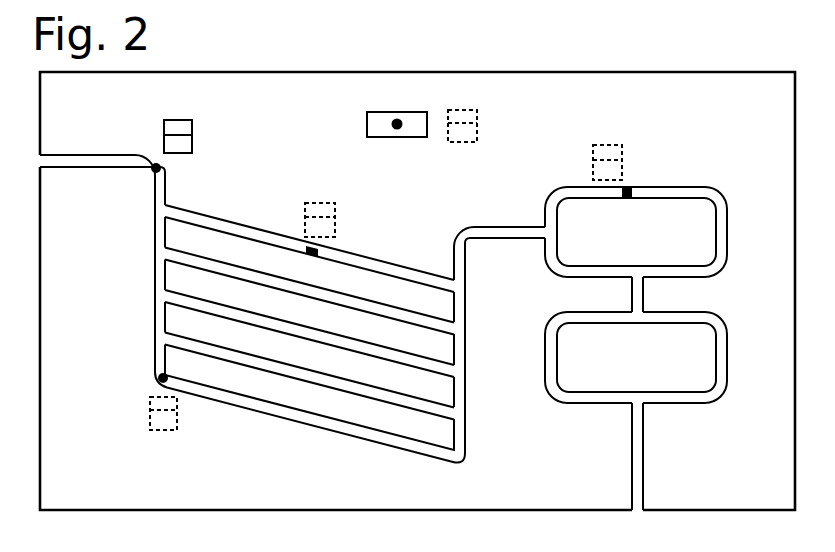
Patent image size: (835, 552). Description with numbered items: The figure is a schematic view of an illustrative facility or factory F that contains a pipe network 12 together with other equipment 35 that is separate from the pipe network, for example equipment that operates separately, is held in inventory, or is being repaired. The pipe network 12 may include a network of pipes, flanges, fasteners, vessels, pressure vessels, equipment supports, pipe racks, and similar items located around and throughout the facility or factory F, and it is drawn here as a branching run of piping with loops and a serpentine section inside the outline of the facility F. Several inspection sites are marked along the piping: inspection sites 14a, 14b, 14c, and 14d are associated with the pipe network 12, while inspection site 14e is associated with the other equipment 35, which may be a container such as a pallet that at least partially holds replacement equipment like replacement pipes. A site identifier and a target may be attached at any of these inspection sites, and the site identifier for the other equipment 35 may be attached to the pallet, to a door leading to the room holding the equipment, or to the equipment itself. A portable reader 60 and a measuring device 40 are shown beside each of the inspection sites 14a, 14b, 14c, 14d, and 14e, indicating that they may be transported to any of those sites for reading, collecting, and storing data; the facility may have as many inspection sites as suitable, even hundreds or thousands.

The facility or factory F is at (760, 72).
The pipe network 12 is at (84, 173).
The inspection site 14a is at (173, 166).
The inspection site 14b is at (147, 384).
The inspection site 14c is at (313, 267).
The inspection site 14d is at (632, 209).
The inspection site 14e is at (399, 149).
The other equipment 35 is at (398, 104).
The measuring device 40 is at (201, 125).
The portable reader 60 is at (201, 142).